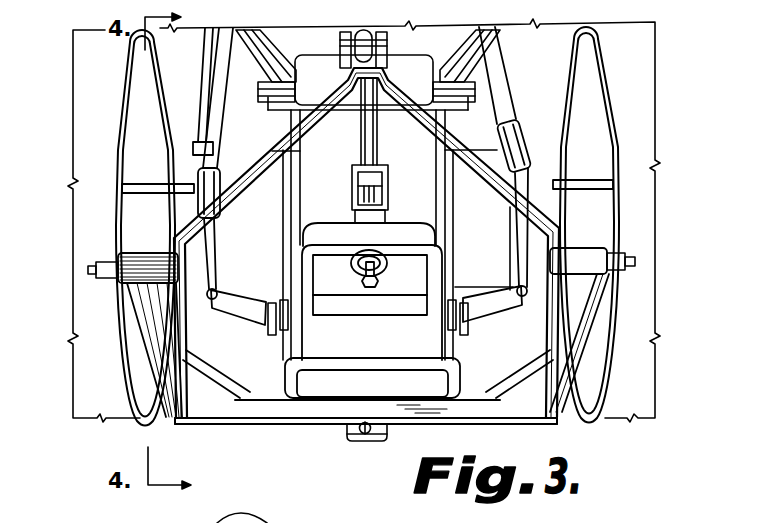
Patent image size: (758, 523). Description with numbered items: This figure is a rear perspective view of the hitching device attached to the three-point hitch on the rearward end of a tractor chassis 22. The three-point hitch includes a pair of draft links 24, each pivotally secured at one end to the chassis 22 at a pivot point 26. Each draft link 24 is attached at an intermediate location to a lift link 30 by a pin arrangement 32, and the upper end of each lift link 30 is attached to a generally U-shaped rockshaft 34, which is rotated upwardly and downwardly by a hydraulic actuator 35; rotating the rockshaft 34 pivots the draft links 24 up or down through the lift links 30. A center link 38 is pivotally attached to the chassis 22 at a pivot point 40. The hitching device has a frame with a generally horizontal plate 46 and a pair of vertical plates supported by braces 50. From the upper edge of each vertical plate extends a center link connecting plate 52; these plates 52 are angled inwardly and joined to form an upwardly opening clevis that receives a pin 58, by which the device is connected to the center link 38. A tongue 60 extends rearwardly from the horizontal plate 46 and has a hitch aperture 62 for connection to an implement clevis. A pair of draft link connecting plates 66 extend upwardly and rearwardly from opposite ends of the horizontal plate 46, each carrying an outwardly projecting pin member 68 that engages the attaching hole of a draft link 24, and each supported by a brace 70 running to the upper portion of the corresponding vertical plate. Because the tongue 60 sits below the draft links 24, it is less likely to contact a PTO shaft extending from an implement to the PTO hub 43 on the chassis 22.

The chassis 22 is at (491, 244).
The draft links 24 is at (240, 299).
The pivot point 26 is at (284, 335).
The lift link 30 is at (219, 72).
The pin arrangement 32 is at (216, 302).
The rockshaft 34 is at (270, 100).
The hydraulic actuator 35 is at (205, 52).
The center link 38 is at (369, 137).
The pivot point 40 is at (385, 190).
The PTO hub 43 is at (361, 278).
The horizontal plate 46 is at (462, 424).
The braces 50 is at (217, 412).
The center link connecting plate 52 is at (275, 151).
The pin 58 is at (385, 42).
The tongue 60 is at (347, 436).
The hitch aperture 62 is at (366, 441).
The draft link connecting plates 66 is at (130, 350).
The pin member 68 is at (94, 270).
The brace 70 is at (152, 253).